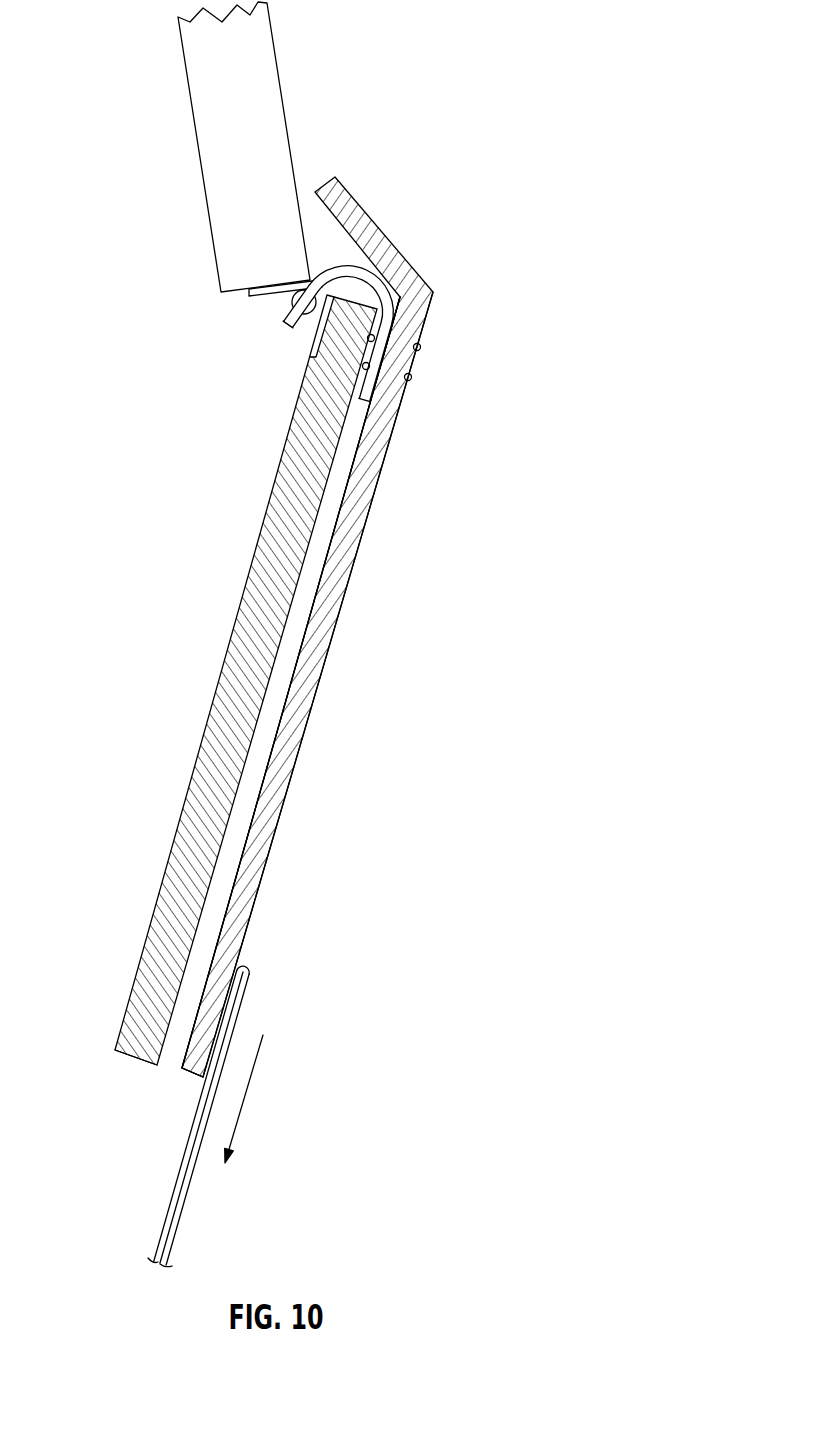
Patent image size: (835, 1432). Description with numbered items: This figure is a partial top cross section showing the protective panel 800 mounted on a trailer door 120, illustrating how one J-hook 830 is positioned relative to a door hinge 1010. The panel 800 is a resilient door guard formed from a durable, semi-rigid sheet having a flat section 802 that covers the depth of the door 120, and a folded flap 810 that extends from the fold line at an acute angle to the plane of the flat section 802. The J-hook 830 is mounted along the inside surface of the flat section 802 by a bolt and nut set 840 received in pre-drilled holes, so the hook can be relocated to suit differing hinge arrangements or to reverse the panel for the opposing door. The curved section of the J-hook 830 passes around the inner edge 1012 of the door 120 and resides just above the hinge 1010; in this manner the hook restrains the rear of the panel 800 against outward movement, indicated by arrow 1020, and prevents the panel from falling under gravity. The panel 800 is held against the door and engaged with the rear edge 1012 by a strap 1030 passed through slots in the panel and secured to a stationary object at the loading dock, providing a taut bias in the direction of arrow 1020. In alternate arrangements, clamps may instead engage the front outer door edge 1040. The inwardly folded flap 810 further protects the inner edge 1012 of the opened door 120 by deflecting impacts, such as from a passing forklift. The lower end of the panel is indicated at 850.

The trailer door 120 is at (217, 703).
The protective panel 800 is at (315, 684).
The flat section 802 is at (298, 708).
The folded flap 810 is at (326, 627).
The J-hook 830 is at (382, 240).
The bolt and nut set 840 is at (420, 349).
The lower end of bracket leg 850 is at (186, 1071).
The hinge 1010 is at (268, 296).
The inner edge of the door 1012 is at (357, 303).
The arrow indicating outward movement 1020 is at (246, 1098).
The strap 1030 is at (185, 1193).
The front outer door edge 1040 is at (127, 1057).